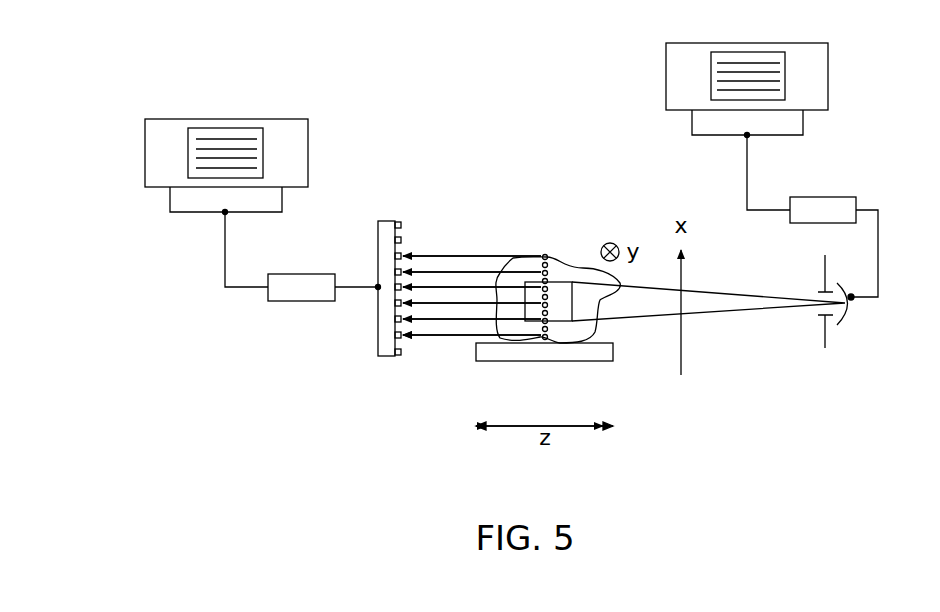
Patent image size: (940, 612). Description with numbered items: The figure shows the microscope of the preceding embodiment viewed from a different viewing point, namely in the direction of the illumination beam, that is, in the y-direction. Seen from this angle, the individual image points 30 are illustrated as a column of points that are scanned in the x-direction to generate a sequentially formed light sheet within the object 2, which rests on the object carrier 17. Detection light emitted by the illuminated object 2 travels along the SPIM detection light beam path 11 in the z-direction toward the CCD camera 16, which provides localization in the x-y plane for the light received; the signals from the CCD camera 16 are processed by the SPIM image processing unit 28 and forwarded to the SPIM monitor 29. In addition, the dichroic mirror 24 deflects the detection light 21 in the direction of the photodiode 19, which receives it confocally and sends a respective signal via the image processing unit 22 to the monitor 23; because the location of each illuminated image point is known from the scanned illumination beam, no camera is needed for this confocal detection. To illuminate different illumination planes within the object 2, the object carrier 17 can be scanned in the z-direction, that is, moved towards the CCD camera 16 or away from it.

The object 2 is at (518, 278).
The SPIM detection light beam path 11 is at (444, 197).
The CCD camera 16 is at (384, 221).
The object carrier 17 is at (604, 353).
The photodiode 19 is at (855, 305).
The detection light 21 is at (747, 304).
The image processing unit 22 is at (300, 301).
The monitor 23 is at (145, 152).
The dichroic mirror 24 is at (562, 295).
The SPIM image processing unit 28 is at (822, 206).
The SPIM monitor 29 is at (828, 75).
The image points 30 is at (546, 340).